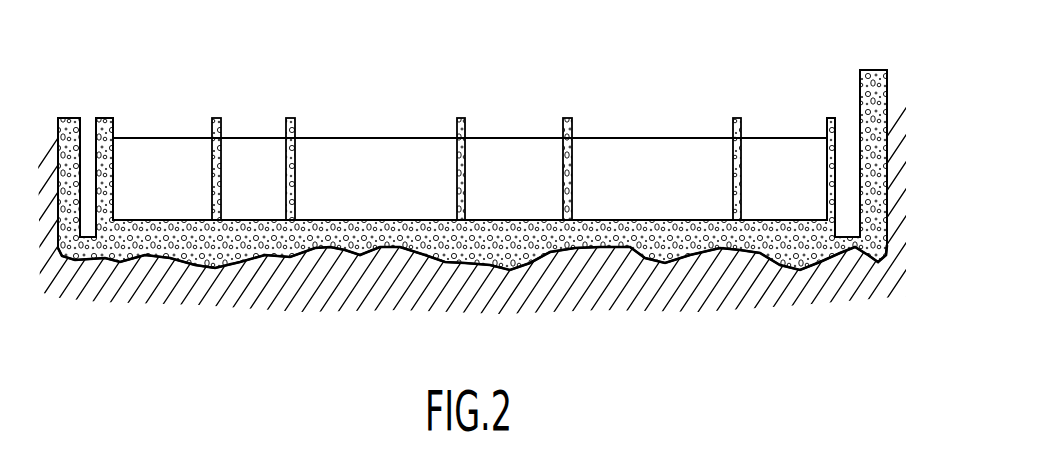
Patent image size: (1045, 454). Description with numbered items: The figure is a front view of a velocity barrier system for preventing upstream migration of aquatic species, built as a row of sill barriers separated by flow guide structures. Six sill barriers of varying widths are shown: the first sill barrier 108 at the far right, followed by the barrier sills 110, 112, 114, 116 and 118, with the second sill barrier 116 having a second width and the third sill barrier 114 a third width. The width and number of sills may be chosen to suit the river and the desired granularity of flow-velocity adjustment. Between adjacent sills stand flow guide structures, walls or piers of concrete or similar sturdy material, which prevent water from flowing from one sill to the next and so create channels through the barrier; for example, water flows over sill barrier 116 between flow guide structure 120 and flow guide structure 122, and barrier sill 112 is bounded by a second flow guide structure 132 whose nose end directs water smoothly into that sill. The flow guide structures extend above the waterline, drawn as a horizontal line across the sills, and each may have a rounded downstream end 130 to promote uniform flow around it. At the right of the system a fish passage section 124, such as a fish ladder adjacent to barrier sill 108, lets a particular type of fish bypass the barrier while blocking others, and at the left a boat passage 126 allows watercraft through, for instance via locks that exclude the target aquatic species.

The first sill barrier 108 is at (790, 150).
The barrier sill 110 is at (663, 150).
The barrier sill 112 is at (528, 150).
The third sill barrier 114 is at (368, 150).
The second sill barrier 116 is at (272, 150).
The barrier sill 118 is at (173, 150).
The flow guide structure 120 is at (291, 117).
The flow guide structure 122 is at (216, 118).
The fish passage section 124 is at (850, 115).
The boat passage system 126 is at (88, 114).
The downstream end 130 is at (567, 118).
The second flow guide structure 132 is at (461, 118).